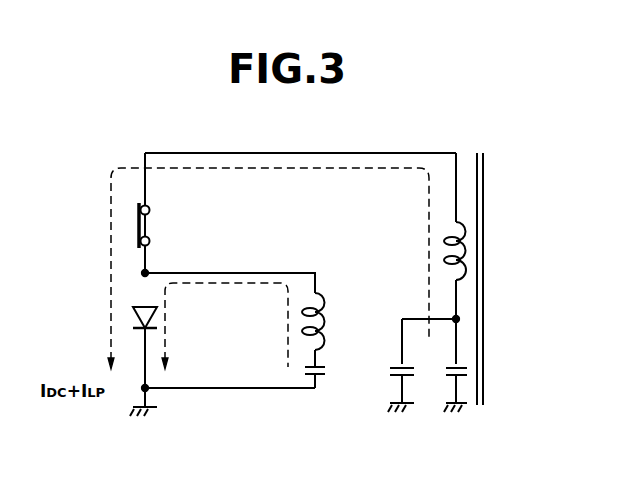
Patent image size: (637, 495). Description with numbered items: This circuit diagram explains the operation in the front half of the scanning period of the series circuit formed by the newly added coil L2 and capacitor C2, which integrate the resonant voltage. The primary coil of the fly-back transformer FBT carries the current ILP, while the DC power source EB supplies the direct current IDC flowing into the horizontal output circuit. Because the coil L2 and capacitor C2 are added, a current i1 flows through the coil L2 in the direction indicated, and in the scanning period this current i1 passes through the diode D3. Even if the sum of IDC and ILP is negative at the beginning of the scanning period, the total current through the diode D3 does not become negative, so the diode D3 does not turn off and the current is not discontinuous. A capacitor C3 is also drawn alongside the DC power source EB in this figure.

The diode D3 is at (134, 306).
The coil L2 is at (330, 321).
The capacitor C2 is at (325, 378).
The capacitor C3 is at (387, 388).
The DC power source EB is at (446, 390).
The fly-back transformer FBT is at (483, 169).
The current i1 is at (225, 326).